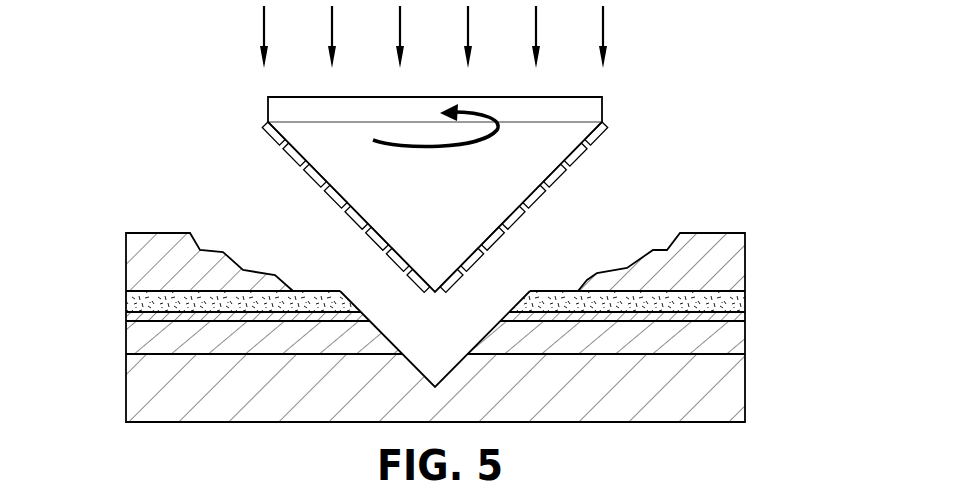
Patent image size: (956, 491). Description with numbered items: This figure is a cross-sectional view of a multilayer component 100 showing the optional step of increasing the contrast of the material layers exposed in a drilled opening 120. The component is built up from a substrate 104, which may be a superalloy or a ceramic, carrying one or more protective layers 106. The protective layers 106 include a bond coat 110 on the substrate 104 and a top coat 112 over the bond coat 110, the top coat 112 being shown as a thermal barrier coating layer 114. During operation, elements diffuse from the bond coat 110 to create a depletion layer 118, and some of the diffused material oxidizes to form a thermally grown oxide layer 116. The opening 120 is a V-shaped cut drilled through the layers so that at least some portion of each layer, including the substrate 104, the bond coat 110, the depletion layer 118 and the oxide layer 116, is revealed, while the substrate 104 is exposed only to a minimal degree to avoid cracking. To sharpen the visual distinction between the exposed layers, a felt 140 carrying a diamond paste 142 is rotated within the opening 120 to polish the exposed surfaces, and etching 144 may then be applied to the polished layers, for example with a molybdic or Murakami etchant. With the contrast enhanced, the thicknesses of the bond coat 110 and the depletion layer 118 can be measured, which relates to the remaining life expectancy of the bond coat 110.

The multilayer component 100 is at (173, 172).
The substrate 104 is at (733, 383).
The protective layer 106 is at (117, 195).
The bond coat 110 is at (733, 329).
The top coat 112 is at (753, 195).
The thermal barrier coating layer 114 is at (690, 247).
The oxide layer 116 is at (660, 297).
The depletion layer 118 is at (733, 317).
The opening 120 is at (525, 298).
The felt 140 is at (577, 110).
The diamond paste 142 is at (532, 207).
The etching 144 is at (603, 32).